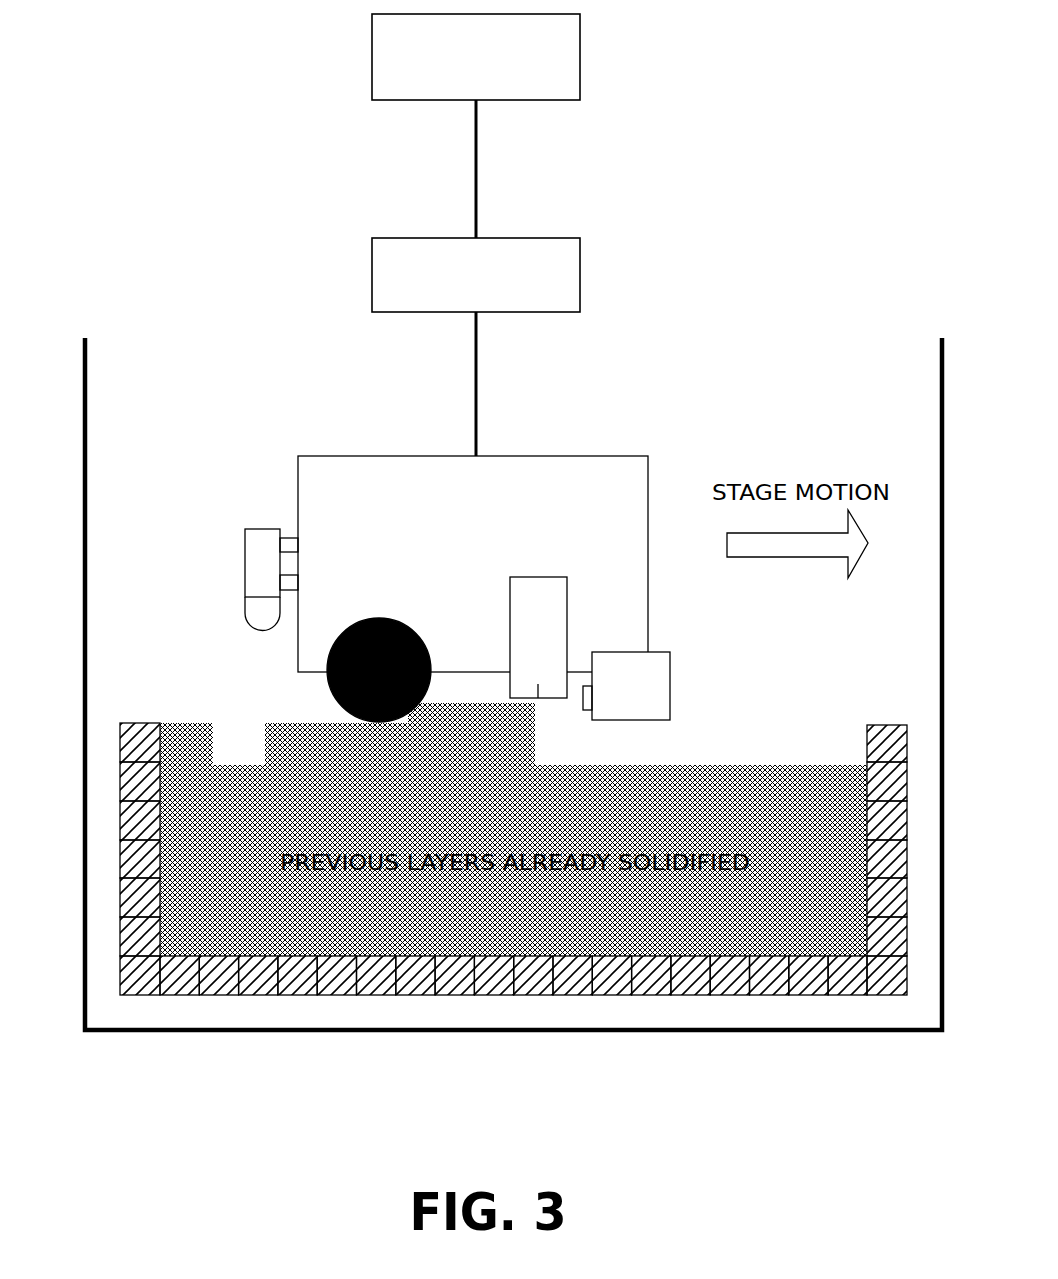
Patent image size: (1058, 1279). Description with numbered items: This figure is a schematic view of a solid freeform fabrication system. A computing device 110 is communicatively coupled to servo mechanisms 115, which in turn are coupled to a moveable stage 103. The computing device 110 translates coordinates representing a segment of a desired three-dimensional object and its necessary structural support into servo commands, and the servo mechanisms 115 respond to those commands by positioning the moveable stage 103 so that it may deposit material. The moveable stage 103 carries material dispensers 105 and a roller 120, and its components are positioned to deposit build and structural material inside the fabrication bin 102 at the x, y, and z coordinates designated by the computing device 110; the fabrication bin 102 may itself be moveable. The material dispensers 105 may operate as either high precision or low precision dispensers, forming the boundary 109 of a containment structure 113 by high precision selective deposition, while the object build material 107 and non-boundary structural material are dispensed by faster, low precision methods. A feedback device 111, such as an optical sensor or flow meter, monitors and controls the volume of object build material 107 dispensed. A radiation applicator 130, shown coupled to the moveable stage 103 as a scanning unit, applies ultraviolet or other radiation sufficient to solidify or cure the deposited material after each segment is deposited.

The fabrication bin 102 is at (133, 342).
The moveable stage 103 is at (452, 509).
The material dispensers 105 is at (567, 615).
The object build material 107 is at (537, 733).
The boundary 109 is at (176, 722).
The computing device 110 is at (580, 57).
The feedback device 111 is at (670, 684).
The containment structure 113 is at (644, 1000).
The servo mechanisms 115 is at (580, 273).
The roller 120 is at (341, 648).
The radiation applicator 130 is at (240, 530).